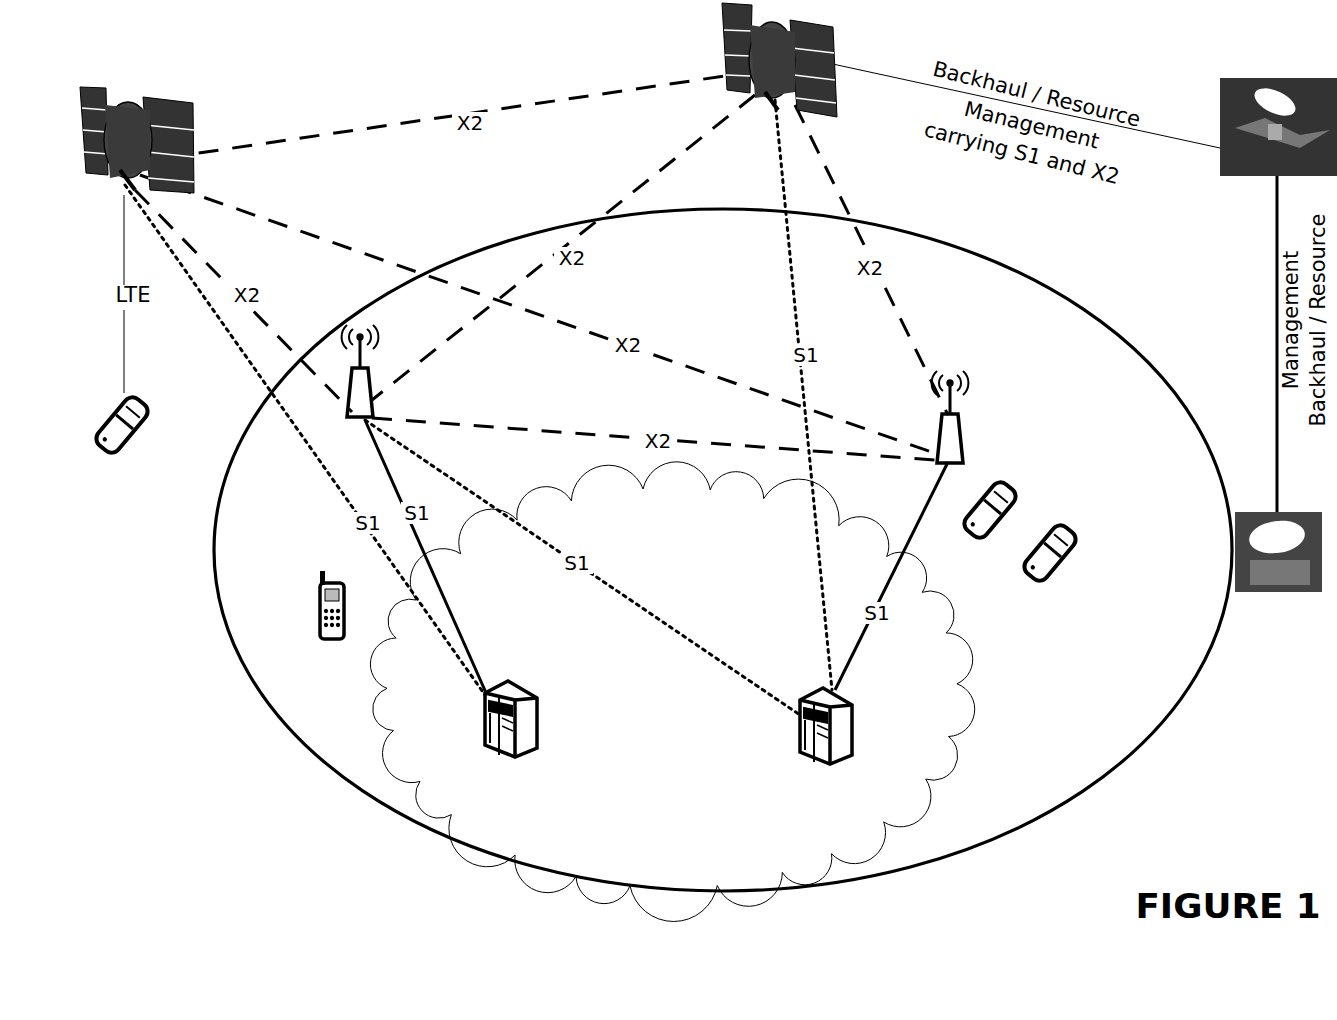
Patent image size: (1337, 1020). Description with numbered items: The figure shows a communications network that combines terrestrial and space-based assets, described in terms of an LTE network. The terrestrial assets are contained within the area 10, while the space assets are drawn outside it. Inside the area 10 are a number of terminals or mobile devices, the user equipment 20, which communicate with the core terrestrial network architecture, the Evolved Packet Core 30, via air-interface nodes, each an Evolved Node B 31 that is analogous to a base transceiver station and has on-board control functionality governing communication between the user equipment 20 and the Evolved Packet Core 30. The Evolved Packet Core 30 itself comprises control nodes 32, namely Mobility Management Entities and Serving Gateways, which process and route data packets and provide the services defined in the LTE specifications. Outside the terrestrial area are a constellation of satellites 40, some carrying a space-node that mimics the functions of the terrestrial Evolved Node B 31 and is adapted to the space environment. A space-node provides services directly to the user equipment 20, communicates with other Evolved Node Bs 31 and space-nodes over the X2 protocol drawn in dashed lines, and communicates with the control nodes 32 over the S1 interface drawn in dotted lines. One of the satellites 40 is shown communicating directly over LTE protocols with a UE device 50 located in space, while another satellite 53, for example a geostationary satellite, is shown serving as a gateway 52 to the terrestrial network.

The area 10 is at (1173, 712).
The user equipment 20 is at (317, 624).
The Evolved Packet Core 30 is at (960, 690).
The Evolved Node B 31 is at (965, 438).
The control nodes 32 is at (498, 682).
The satellites 40 is at (180, 108).
The UE device 50 is at (143, 405).
The gateway 52 is at (1290, 595).
The satellite 53 is at (1220, 88).